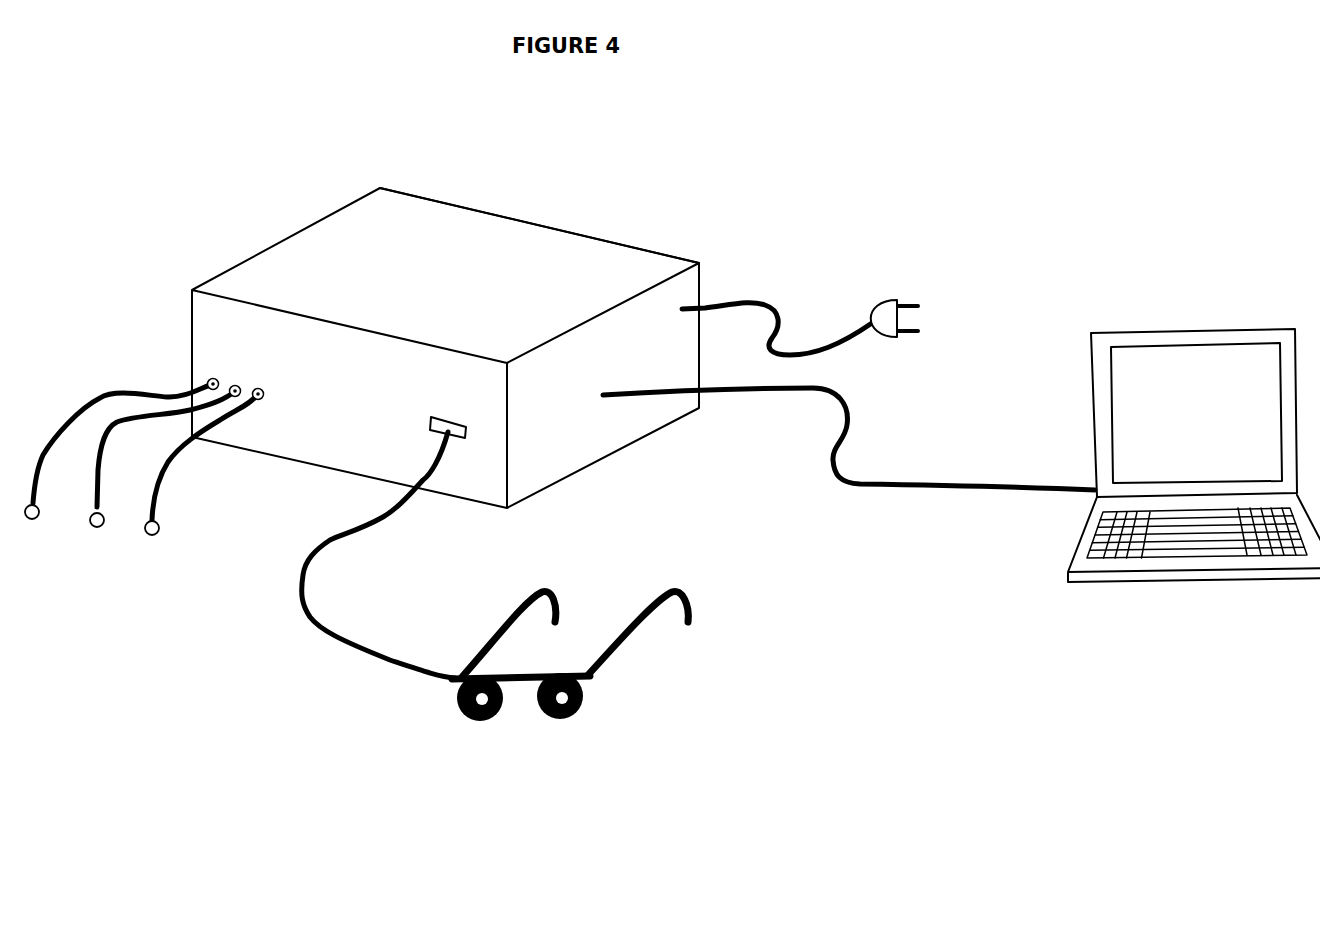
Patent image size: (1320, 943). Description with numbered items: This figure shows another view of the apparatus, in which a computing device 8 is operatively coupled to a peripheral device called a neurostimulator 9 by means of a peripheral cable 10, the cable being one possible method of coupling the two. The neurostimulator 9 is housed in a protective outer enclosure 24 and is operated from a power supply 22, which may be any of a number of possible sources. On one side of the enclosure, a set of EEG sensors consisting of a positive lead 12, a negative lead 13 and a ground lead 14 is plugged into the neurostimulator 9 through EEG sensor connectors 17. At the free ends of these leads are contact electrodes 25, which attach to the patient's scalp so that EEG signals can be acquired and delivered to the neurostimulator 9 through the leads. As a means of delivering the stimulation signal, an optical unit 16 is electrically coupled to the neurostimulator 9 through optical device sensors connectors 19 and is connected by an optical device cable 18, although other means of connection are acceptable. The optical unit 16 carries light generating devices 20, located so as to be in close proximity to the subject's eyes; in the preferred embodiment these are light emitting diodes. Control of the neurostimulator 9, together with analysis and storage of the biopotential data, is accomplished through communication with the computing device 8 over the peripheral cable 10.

The computing device 8 is at (1087, 340).
The neurostimulator 9 is at (398, 240).
The peripheral cable 10 is at (935, 477).
The positive lead 12 is at (132, 387).
The negative lead 13 is at (113, 425).
The ground lead 14 is at (170, 467).
The optical unit 16 is at (612, 689).
The EEG sensor connectors 17 is at (255, 381).
The optical device cable 18 is at (310, 623).
The optical device sensors connectors 19 is at (442, 412).
The light generating devices 20 is at (570, 725).
The power supply 22 is at (757, 298).
The protective outer enclosure 24 is at (515, 217).
The contact electrodes 25 is at (147, 540).